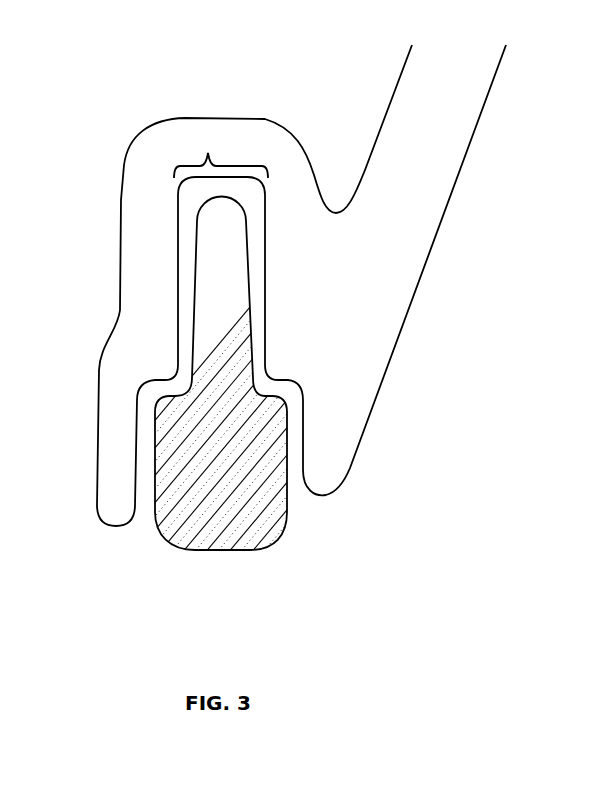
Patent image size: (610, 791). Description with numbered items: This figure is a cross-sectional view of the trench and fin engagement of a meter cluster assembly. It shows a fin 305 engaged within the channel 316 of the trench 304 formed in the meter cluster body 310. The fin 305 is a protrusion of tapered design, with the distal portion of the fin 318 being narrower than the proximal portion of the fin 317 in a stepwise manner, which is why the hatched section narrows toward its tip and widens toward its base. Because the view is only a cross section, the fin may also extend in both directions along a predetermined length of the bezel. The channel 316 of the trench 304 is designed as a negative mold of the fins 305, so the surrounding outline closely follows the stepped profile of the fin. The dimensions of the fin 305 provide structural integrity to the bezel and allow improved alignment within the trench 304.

The trench 304 is at (203, 152).
The fin 305 is at (182, 522).
The meter cluster body 310 is at (375, 80).
The channel 316 is at (187, 222).
The proximal portion of the fin 317 is at (153, 427).
The distal portion of the fin 318 is at (190, 275).